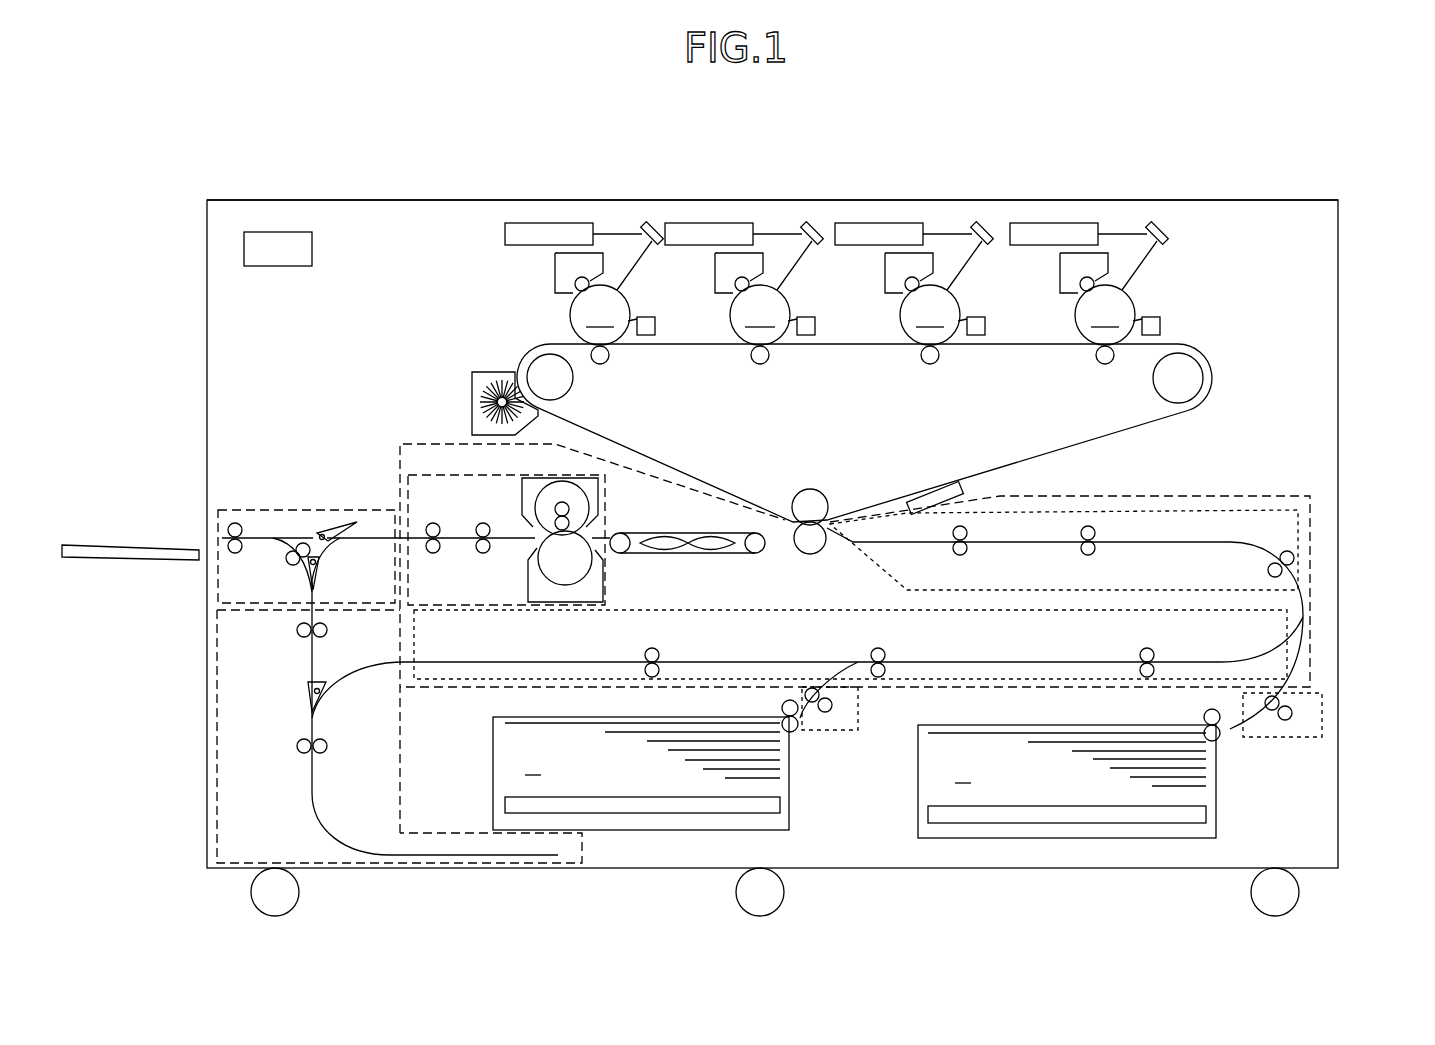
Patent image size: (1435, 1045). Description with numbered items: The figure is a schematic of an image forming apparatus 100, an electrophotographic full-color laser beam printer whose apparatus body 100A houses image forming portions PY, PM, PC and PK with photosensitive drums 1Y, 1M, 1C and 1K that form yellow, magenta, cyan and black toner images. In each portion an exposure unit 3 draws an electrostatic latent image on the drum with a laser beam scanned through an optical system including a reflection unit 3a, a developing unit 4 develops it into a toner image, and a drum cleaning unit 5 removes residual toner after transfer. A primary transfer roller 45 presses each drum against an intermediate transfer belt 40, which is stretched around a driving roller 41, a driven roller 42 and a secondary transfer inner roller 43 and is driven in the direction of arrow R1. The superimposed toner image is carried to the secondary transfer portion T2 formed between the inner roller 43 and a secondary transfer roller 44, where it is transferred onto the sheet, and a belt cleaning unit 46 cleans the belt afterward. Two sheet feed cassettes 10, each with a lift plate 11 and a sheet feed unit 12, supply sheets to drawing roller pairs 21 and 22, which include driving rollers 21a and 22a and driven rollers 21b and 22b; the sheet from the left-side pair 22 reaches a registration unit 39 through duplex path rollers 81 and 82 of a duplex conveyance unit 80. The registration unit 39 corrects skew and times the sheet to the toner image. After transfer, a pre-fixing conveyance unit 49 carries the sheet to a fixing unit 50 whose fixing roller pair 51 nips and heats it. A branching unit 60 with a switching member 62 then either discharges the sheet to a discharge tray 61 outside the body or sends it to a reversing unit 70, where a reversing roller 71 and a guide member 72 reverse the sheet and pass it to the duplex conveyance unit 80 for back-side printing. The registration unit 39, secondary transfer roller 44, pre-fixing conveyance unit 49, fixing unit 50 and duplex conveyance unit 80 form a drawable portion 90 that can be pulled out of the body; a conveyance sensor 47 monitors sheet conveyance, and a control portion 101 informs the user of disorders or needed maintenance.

The image forming apparatus 100 is at (1218, 178).
The apparatus body 100A is at (1319, 199).
The control portion 101 is at (283, 232).
The exposure unit 3 is at (528, 222).
The reflection unit 3a is at (656, 224).
The image forming portion PY is at (579, 210).
The image forming portion PM is at (735, 210).
The image forming portion PC is at (908, 210).
The image forming portion PK is at (1083, 210).
The photosensitive drum 1Y is at (600, 315).
The photosensitive drum 1M is at (760, 315).
The photosensitive drum 1C is at (930, 315).
The photosensitive drum 1K is at (1105, 315).
The developing unit 4 is at (555, 273).
The drum cleaning unit 5 is at (647, 317).
The intermediate transfer belt 40 is at (1067, 447).
The rotation direction R1 is at (1000, 369).
The driving roller 41 is at (567, 382).
The driven roller 42 is at (1192, 376).
The secondary transfer inner roller 43 is at (810, 489).
The secondary transfer roller 44 is at (810, 554).
The primary transfer roller 45 is at (608, 358).
The belt cleaning unit 46 is at (483, 372).
The conveyance sensor 47 is at (937, 493).
The secondary transfer portion T2 is at (791, 529).
The pre-fixing conveyance unit 49 is at (653, 553).
The fixing unit 50 is at (425, 471).
The fixing roller pair 51 is at (590, 497).
The branching unit 60 is at (255, 502).
The discharge tray 61 is at (112, 545).
The switching member 62 is at (337, 532).
The reversing unit 70 is at (202, 819).
The reversing roller 71 is at (297, 743).
The guide member 72 is at (306, 692).
The duplex conveyance unit 80 is at (1289, 611).
The duplex path roller 81 is at (886, 646).
The duplex path roller 82 is at (1154, 647).
The drawable portion 90 is at (1313, 495).
The registration unit 39 is at (1305, 530).
The sheet feed cassette 10 is at (665, 842).
The lift plate 11 is at (602, 815).
The sheet feed unit 12 is at (800, 746).
The drawing roller pair 21 is at (1326, 743).
The driving roller 21a is at (1292, 722).
The driven roller 21b is at (1271, 712).
The drawing roller pair 22 is at (868, 733).
The driving roller 22a is at (832, 707).
The driven roller 22b is at (810, 712).